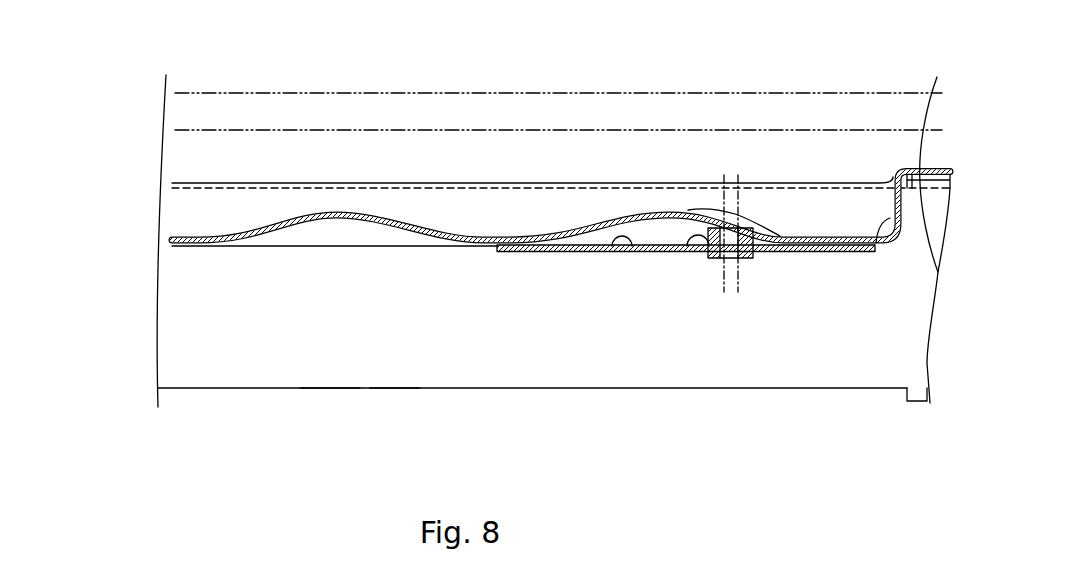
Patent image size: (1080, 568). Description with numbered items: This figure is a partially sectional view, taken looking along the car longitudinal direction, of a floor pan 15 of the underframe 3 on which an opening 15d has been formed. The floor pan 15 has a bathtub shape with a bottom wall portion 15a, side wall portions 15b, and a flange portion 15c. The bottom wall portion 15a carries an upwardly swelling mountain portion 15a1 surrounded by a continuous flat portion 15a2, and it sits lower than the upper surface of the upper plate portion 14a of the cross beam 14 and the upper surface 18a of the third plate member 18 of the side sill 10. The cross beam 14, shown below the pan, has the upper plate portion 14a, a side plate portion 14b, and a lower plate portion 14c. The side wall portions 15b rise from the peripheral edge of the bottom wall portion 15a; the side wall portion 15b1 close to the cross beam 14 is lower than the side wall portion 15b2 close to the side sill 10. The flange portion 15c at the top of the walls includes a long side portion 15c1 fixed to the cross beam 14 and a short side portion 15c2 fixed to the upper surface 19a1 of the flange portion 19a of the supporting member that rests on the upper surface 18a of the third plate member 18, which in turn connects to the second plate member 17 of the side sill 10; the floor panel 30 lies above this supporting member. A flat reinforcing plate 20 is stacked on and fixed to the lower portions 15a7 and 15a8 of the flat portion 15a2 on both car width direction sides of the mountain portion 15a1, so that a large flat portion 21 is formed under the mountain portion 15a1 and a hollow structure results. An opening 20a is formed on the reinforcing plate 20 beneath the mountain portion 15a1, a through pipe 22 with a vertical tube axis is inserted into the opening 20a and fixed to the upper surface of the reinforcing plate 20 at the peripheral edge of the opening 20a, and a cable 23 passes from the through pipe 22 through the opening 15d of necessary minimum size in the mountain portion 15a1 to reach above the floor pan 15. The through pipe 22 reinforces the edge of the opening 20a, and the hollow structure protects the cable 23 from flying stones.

The underframe 3 is at (868, 402).
The side sill 10 is at (950, 188).
The cross beam 14 is at (243, 390).
The upper plate portion 14a is at (250, 187).
The side plate portion 14b is at (318, 365).
The lower plate portion 14c is at (383, 390).
The floor pan 15 is at (331, 183).
The bottom wall portion 15a is at (523, 252).
The mountain portion 15a1 is at (659, 216).
The flat portion 15a2 is at (516, 238).
The lower portion 15a7 is at (524, 250).
The lower portion 15a8 is at (858, 252).
The side wall portion 15b is at (852, 236).
The side wall portion close to cross beam 15b1 is at (213, 212).
The side wall portion close to side sill 15b2 is at (878, 252).
The flange portion 15c is at (940, 170).
The long side portion 15c1 is at (457, 183).
The short side portion 15c2 is at (937, 168).
The opening 15d is at (701, 211).
The second plate member 17 is at (928, 403).
The third plate member 18 is at (923, 230).
The upper surface 18a is at (932, 176).
The flange portion 19a is at (940, 262).
The upper surface 19a1 is at (950, 178).
The reinforcing plate 20 is at (760, 258).
The opening 20a is at (727, 262).
The flat portion 21 is at (612, 252).
The through pipe 22 is at (682, 253).
The cable 23 is at (743, 274).
The floor panel 30 is at (895, 95).